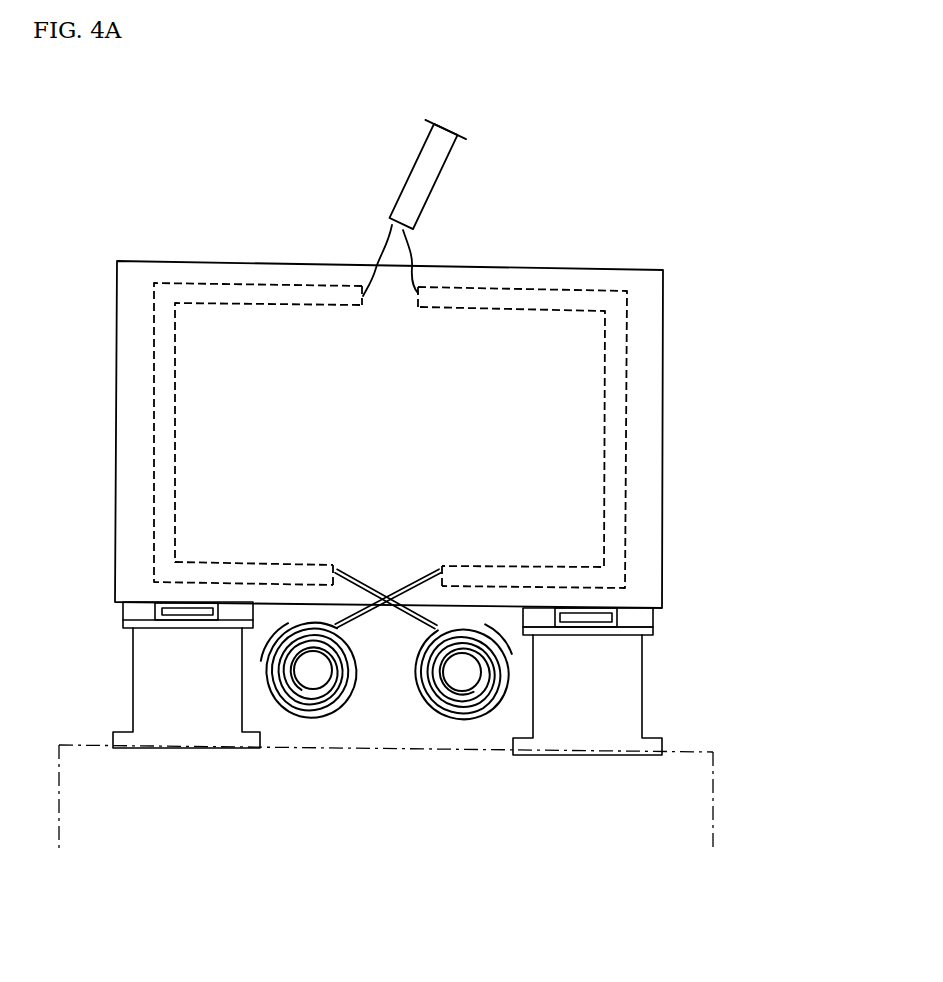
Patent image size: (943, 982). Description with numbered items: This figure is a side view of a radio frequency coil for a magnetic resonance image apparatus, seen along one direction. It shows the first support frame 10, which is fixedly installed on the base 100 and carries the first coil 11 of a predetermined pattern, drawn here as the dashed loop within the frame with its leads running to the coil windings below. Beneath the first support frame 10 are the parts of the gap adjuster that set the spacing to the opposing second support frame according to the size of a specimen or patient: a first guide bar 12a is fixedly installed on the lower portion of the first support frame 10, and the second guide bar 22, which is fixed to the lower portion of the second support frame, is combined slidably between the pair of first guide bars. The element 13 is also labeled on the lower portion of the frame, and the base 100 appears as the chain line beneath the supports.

The first support frame 10 is at (678, 278).
The first coil 11 is at (614, 421).
The first guide bar 12a is at (633, 622).
The support 13 is at (612, 633).
The second guide bar 22 is at (593, 619).
The base 100 is at (713, 753).